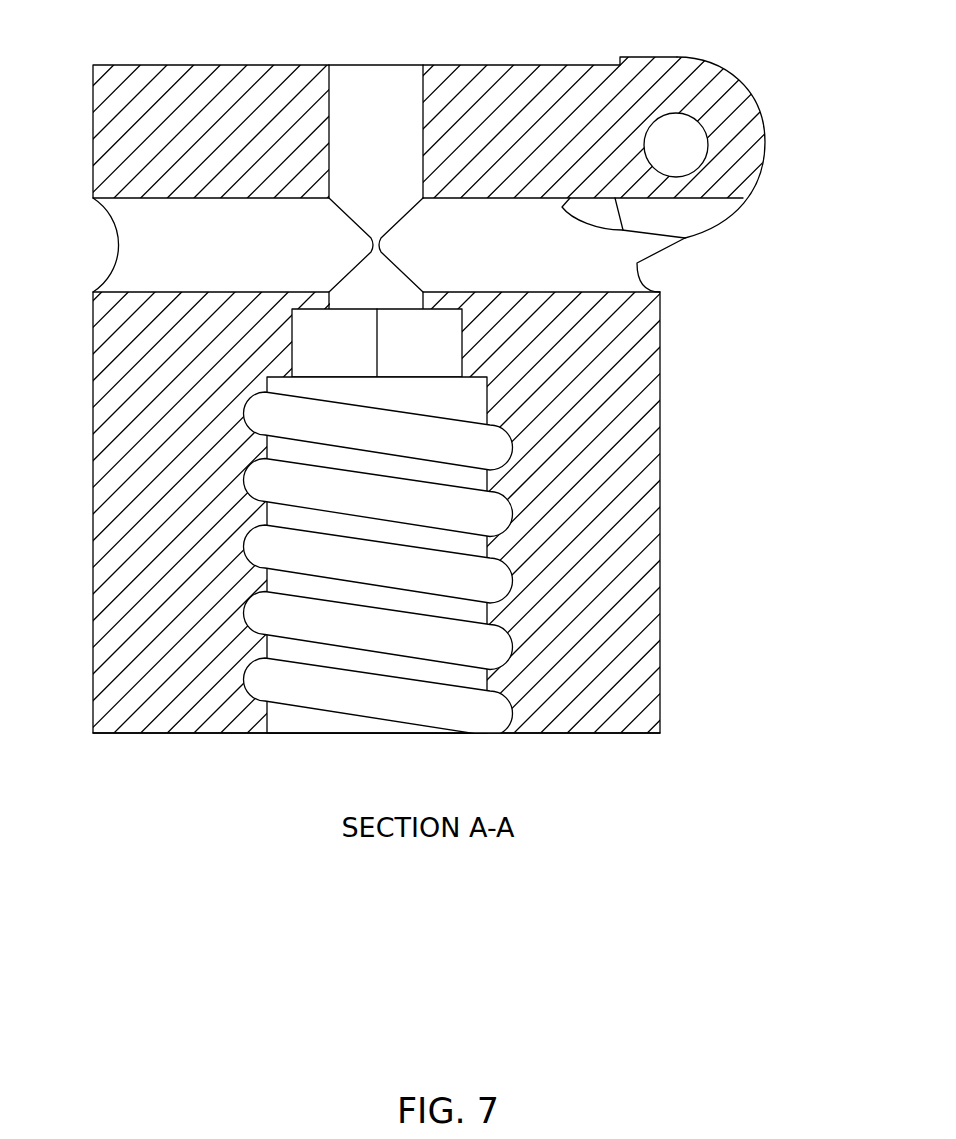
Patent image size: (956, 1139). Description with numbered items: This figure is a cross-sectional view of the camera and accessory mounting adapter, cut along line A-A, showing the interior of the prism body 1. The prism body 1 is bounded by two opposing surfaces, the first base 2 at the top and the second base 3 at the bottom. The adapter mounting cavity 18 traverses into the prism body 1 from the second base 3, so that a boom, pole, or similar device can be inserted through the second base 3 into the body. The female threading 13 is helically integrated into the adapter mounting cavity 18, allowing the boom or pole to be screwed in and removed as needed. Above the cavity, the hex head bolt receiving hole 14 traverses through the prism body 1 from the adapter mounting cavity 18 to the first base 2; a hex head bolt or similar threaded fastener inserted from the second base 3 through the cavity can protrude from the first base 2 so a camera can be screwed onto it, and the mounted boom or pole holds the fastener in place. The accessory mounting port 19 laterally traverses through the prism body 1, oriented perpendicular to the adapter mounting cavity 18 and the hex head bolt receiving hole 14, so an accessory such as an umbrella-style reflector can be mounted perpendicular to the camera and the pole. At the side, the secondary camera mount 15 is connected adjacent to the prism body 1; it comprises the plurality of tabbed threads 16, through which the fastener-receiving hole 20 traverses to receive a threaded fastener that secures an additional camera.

The prism body 1 is at (447, 402).
The first base 2 is at (262, 65).
The second base 3 is at (603, 734).
The female threading 13 is at (376, 538).
The hex head bolt receiving hole 14 is at (376, 67).
The secondary camera mount 15 is at (625, 149).
The plurality of tabbed threads 16 is at (706, 69).
The adapter mounting cavity 18 is at (302, 728).
The accessory mounting port 19 is at (121, 268).
The fastener-receiving hole 20 is at (674, 158).